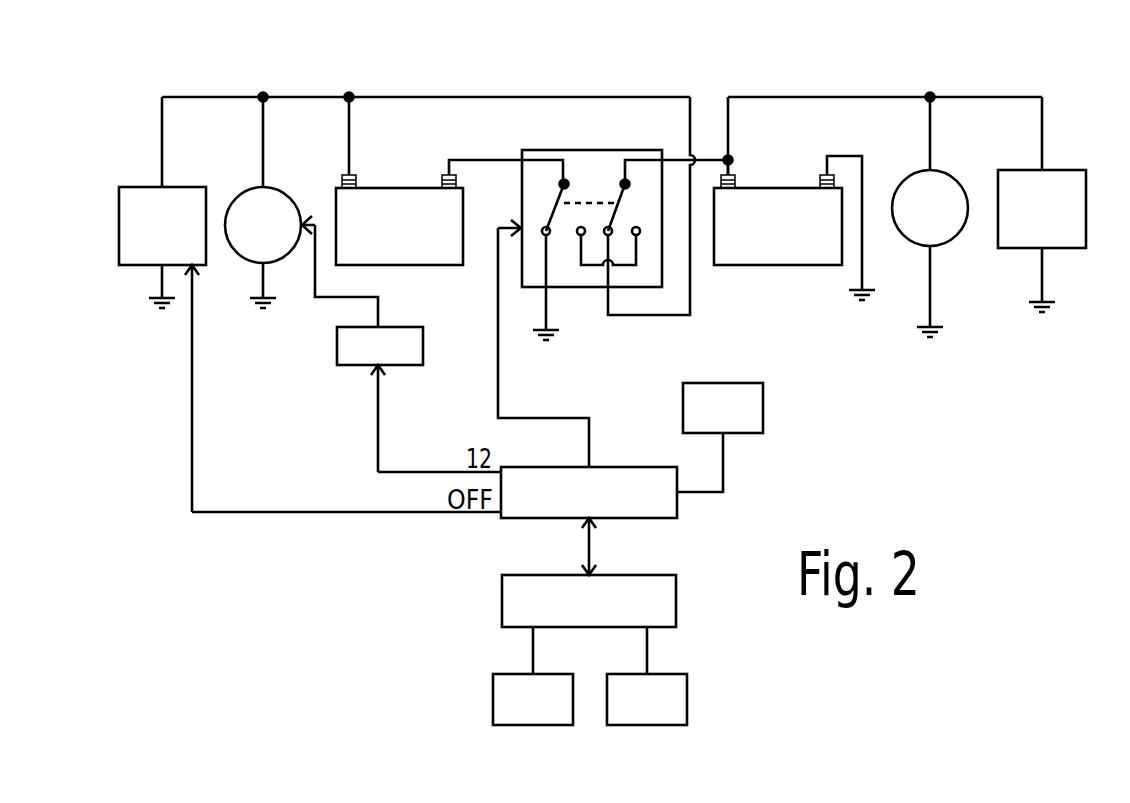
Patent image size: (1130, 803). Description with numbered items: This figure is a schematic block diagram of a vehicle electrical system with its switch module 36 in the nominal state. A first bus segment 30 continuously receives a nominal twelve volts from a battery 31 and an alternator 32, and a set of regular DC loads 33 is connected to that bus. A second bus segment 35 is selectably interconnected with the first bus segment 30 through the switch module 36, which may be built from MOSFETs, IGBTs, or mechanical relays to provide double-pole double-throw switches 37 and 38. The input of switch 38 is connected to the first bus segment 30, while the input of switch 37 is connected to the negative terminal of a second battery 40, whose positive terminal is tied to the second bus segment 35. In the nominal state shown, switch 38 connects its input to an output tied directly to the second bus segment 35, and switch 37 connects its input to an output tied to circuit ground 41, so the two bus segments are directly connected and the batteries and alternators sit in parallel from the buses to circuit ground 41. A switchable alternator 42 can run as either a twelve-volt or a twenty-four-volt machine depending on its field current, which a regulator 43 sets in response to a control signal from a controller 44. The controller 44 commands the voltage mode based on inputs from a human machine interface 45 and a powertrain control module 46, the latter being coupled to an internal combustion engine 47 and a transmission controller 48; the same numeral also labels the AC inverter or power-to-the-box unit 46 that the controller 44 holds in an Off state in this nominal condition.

The first bus segment 30 is at (988, 97).
The battery 31 is at (768, 265).
The alternator 32 is at (917, 167).
The regular DC loads 33 is at (1013, 169).
The second bus segment 35 is at (593, 97).
The switch module 36 is at (547, 148).
The switch 37 is at (545, 189).
The switch 38 is at (619, 174).
The second battery 40 is at (430, 266).
The circuit ground 41 is at (940, 322).
The alternator 42 is at (246, 188).
The regulator 43 is at (337, 357).
The controller 44 is at (627, 467).
The human machine interface 45 is at (695, 383).
The powertrain control module 46 is at (139, 187).
The internal combustion engine 47 is at (687, 670).
The transmission controller 48 is at (500, 675).